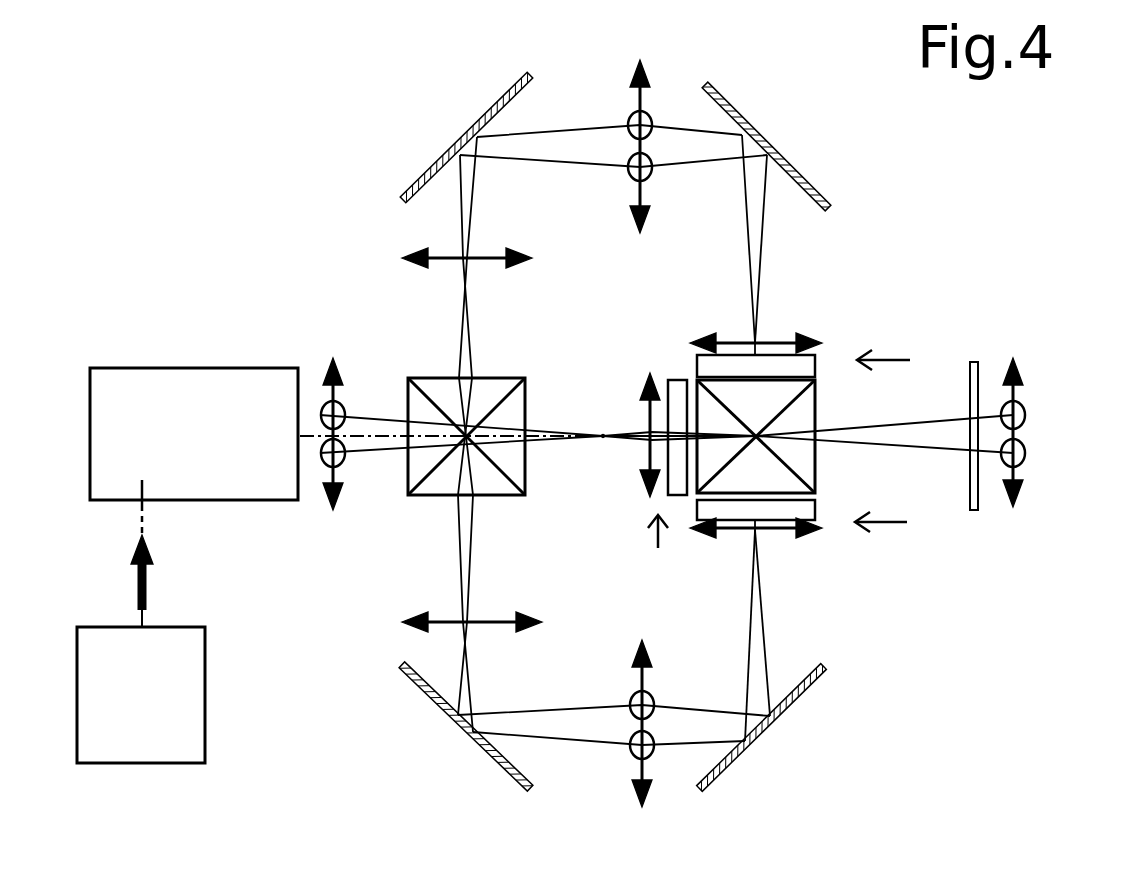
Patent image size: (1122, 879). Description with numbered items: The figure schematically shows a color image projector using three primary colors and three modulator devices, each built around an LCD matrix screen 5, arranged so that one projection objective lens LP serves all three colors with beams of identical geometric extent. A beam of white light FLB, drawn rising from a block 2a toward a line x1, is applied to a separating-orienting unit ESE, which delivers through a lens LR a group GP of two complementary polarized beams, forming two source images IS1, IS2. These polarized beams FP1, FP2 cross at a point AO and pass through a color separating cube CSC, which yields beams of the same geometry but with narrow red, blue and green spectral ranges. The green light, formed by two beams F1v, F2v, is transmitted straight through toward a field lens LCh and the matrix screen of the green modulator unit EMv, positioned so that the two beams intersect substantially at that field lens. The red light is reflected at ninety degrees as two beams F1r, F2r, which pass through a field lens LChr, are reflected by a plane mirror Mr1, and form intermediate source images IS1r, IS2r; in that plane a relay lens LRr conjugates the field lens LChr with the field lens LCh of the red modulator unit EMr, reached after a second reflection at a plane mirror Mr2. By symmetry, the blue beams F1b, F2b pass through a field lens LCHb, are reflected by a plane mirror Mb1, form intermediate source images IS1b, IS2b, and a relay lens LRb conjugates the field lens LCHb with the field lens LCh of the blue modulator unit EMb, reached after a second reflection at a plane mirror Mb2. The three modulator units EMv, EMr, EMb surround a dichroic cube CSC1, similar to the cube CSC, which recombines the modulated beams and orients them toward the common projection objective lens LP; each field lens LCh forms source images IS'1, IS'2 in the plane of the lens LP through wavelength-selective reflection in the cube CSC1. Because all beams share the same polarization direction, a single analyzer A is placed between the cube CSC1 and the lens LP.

The separating-orienting unit ESE is at (136, 368).
The light source unit 2a is at (158, 763).
The signal line x1 is at (142, 505).
The beam of white light FLB is at (137, 583).
The lens LR is at (336, 360).
The source image IS1 is at (322, 462).
The source image IS2 is at (322, 410).
The polarized beam FP1 is at (345, 458).
The polarized beam FP2 is at (341, 417).
The group of two complementary polarized beams GP is at (368, 436).
The focal point AO is at (400, 437).
The color separating cube CSC is at (414, 378).
The red beam F1r is at (586, 127).
The red beam F2r is at (718, 162).
The green beam F1v is at (540, 442).
The green beam F2v is at (540, 432).
The blue beam F1b is at (468, 582).
The blue beam F2b is at (462, 582).
The plane mirror Mr1 is at (418, 182).
The plane mirror Mr2 is at (797, 180).
The plane mirror Mb1 is at (470, 732).
The plane mirror Mb2 is at (788, 706).
The field lens LChr is at (408, 258).
The field lens LCHb is at (407, 620).
The field lens LCh is at (648, 375).
The relay lens LRr is at (642, 95).
The intermediate source image IS1r is at (628, 120).
The intermediate source image IS2r is at (628, 171).
The relay lens LRb is at (640, 795).
The intermediate source image IS1b is at (654, 700).
The intermediate source image IS2b is at (654, 752).
The matrix screen 5 is at (686, 380).
The dichroic cube CSC1 is at (815, 405).
The modulator unit EMr is at (883, 346).
The modulator unit EMb is at (885, 508).
The modulator unit EMv is at (625, 541).
The analyzer A is at (972, 362).
The projection objective lens LP is at (1013, 358).
The source image IS'1 is at (1046, 458).
The source image IS'2 is at (1046, 413).